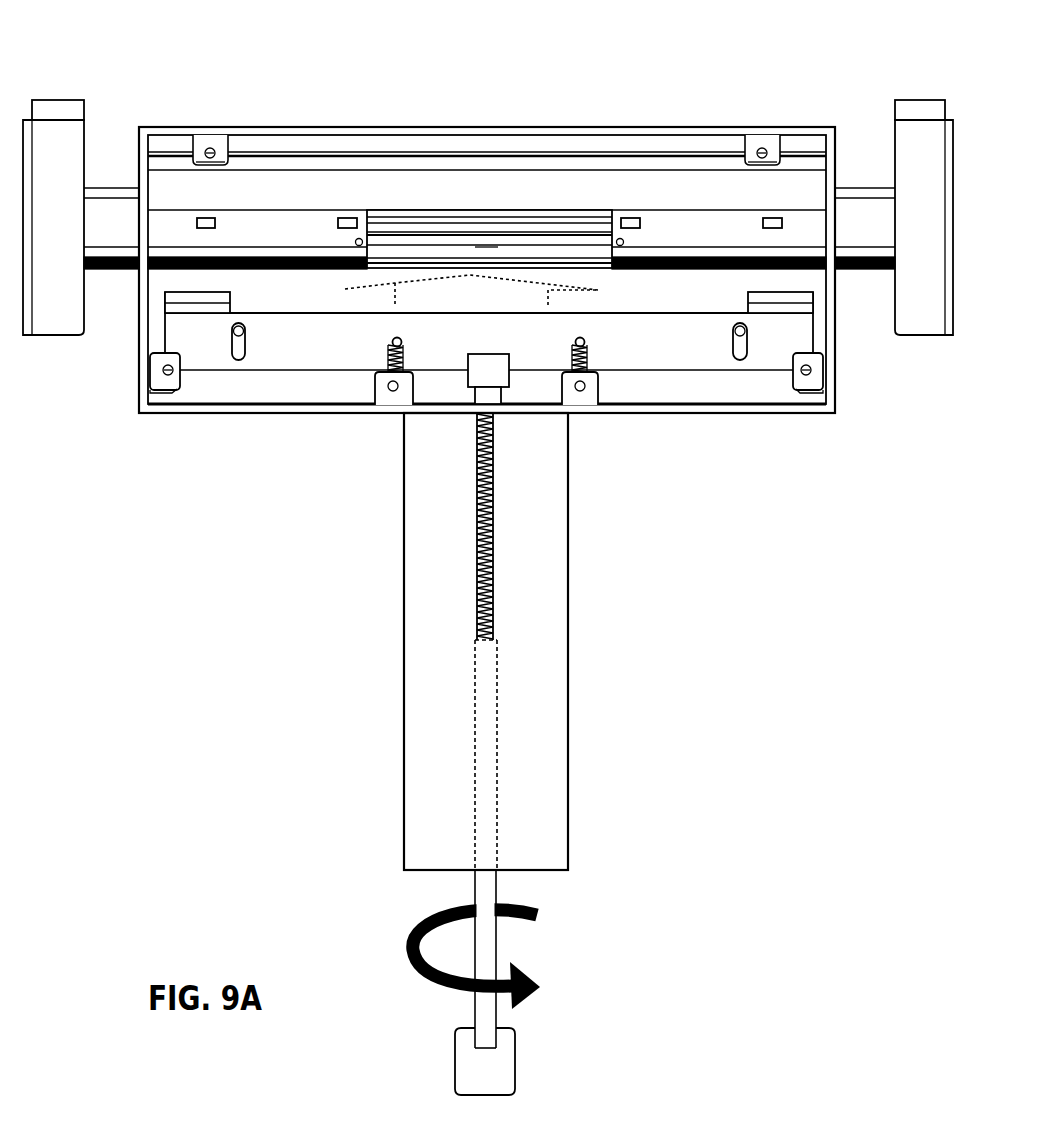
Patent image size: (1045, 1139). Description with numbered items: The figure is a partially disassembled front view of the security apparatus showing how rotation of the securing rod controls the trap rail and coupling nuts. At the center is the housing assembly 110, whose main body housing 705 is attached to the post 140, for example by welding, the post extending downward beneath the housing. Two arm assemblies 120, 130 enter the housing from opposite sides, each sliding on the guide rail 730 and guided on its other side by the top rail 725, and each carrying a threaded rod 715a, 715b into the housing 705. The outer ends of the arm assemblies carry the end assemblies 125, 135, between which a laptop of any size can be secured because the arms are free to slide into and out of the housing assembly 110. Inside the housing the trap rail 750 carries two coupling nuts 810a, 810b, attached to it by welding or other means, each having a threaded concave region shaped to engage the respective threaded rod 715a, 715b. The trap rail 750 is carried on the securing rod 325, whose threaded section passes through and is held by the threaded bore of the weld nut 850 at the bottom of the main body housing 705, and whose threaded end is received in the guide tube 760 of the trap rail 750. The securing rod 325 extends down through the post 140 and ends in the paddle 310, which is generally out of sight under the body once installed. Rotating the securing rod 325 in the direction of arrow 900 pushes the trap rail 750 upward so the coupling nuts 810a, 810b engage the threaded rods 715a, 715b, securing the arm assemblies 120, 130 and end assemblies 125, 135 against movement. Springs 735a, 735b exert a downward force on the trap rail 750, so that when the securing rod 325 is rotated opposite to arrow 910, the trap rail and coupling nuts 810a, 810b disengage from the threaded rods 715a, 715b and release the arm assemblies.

The housing assembly 110 is at (487, 44).
The arm assembly 120 is at (852, 158).
The end assembly 125 is at (907, 87).
The arm assembly 130 is at (93, 172).
The end assembly 135 is at (78, 85).
The post 140 is at (568, 627).
The paddle 310 is at (515, 1073).
The securing rod 325 is at (492, 762).
The main body housing 705 is at (578, 127).
The threaded rod 715a is at (113, 273).
The threaded rod 715b is at (862, 275).
The top rail 725 is at (448, 160).
The guide rail 730 is at (408, 233).
The spring 735a is at (389, 343).
The spring 735b is at (587, 343).
The trap rail 750 is at (320, 362).
The guide tube 760 is at (483, 356).
The coupling nut 810a is at (230, 298).
The coupling nut 810b is at (748, 298).
The weld nut 850 is at (490, 405).
The arrow 900 is at (490, 304).
The arrow 910 is at (497, 953).